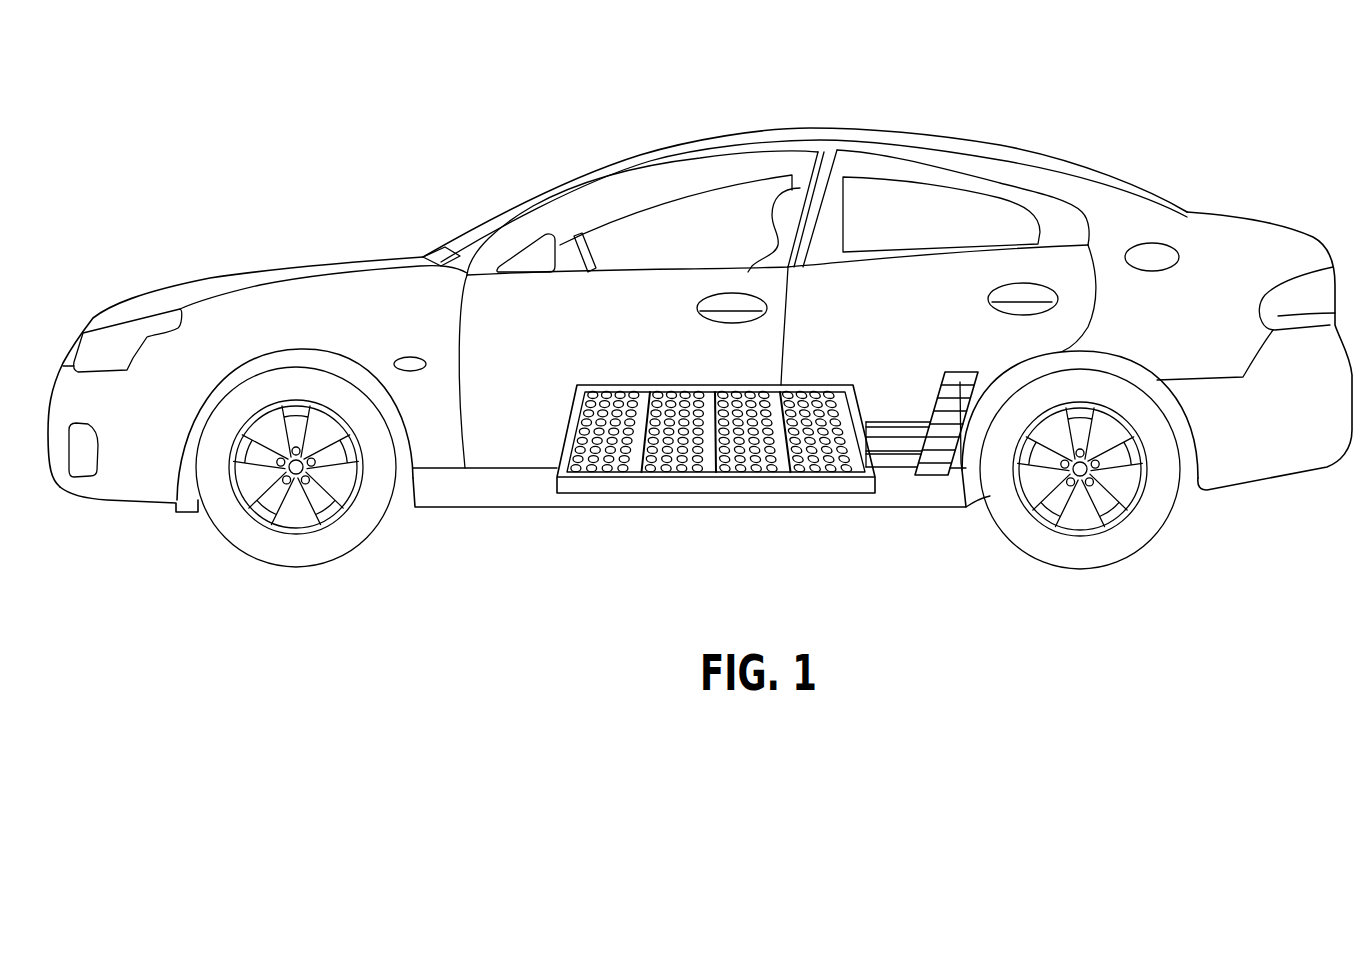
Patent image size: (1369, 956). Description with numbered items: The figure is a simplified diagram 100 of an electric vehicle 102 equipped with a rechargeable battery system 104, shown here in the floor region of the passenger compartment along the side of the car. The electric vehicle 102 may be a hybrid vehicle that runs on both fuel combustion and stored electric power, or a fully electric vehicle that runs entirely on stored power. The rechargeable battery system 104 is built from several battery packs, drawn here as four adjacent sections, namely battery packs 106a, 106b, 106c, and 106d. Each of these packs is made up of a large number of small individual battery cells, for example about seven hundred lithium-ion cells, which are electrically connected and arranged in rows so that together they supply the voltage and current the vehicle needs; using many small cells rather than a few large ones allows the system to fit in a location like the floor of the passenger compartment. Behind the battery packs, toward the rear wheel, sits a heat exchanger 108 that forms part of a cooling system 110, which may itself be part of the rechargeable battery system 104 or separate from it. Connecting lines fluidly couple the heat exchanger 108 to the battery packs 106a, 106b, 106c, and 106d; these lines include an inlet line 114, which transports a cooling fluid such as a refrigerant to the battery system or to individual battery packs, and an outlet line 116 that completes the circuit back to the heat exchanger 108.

The simplified diagram 100 is at (416, 110).
The electric vehicle 102 is at (797, 132).
The rechargeable battery system 104 is at (733, 495).
The battery pack 106a is at (590, 387).
The battery pack 106b is at (672, 387).
The battery pack 106c is at (753, 387).
The battery pack 106d is at (837, 387).
The heat exchanger 108 is at (983, 375).
The cooling system 110 is at (926, 354).
The inlet line 114 is at (880, 418).
The outlet line 116 is at (897, 470).